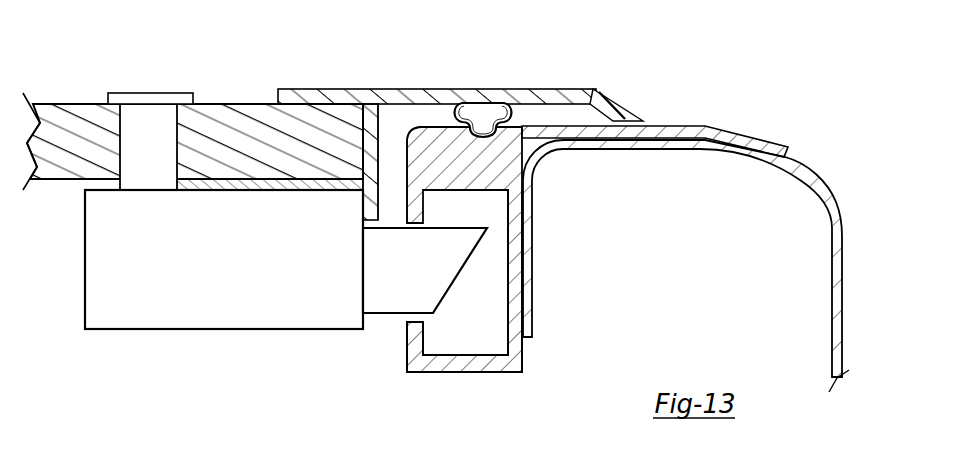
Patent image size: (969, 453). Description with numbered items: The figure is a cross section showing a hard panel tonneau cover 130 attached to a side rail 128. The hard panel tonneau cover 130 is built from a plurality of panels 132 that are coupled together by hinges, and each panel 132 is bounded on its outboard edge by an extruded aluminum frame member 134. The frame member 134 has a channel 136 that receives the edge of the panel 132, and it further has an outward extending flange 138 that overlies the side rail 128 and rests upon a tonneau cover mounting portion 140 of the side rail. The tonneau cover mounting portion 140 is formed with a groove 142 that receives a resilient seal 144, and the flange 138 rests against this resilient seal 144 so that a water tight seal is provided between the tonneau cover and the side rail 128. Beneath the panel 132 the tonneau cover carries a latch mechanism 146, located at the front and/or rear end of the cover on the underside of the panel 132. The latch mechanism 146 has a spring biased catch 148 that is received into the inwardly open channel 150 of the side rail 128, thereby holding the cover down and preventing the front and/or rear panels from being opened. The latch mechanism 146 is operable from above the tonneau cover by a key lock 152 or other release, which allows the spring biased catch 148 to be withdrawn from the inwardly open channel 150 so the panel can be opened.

The side rail 128 is at (683, 112).
The hard panel tonneau cover 130 is at (238, 92).
The panel 132 is at (63, 104).
The frame member 134 is at (370, 78).
The channel 136 is at (290, 136).
The flange 138 is at (481, 102).
The tonneau cover mounting portion 140 is at (404, 118).
The groove 142 is at (483, 138).
The resilient seal 144 is at (504, 108).
The latch mechanism 146 is at (145, 313).
The spring biased catch 148 is at (387, 307).
The inwardly open channel 150 is at (455, 334).
The key lock 152 is at (121, 126).